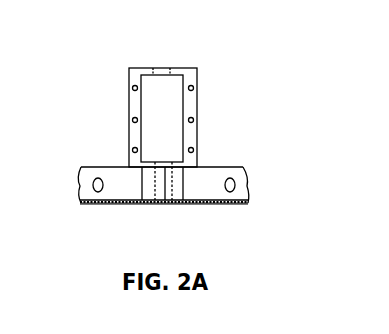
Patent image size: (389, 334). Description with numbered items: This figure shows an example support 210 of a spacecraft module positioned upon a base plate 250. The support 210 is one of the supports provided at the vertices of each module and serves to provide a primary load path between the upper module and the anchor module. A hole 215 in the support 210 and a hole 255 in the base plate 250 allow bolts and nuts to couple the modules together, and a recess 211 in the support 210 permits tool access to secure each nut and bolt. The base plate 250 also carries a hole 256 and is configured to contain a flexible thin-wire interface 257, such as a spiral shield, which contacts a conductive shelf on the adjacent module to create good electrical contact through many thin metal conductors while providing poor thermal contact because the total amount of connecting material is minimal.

The support 210 is at (129, 102).
The recess 211 is at (160, 143).
The hole 215 is at (166, 69).
The base plate 250 is at (122, 183).
The hole 255 is at (172, 178).
The mounting hole 256 is at (230, 185).
The thin-wire interface 257 is at (228, 203).